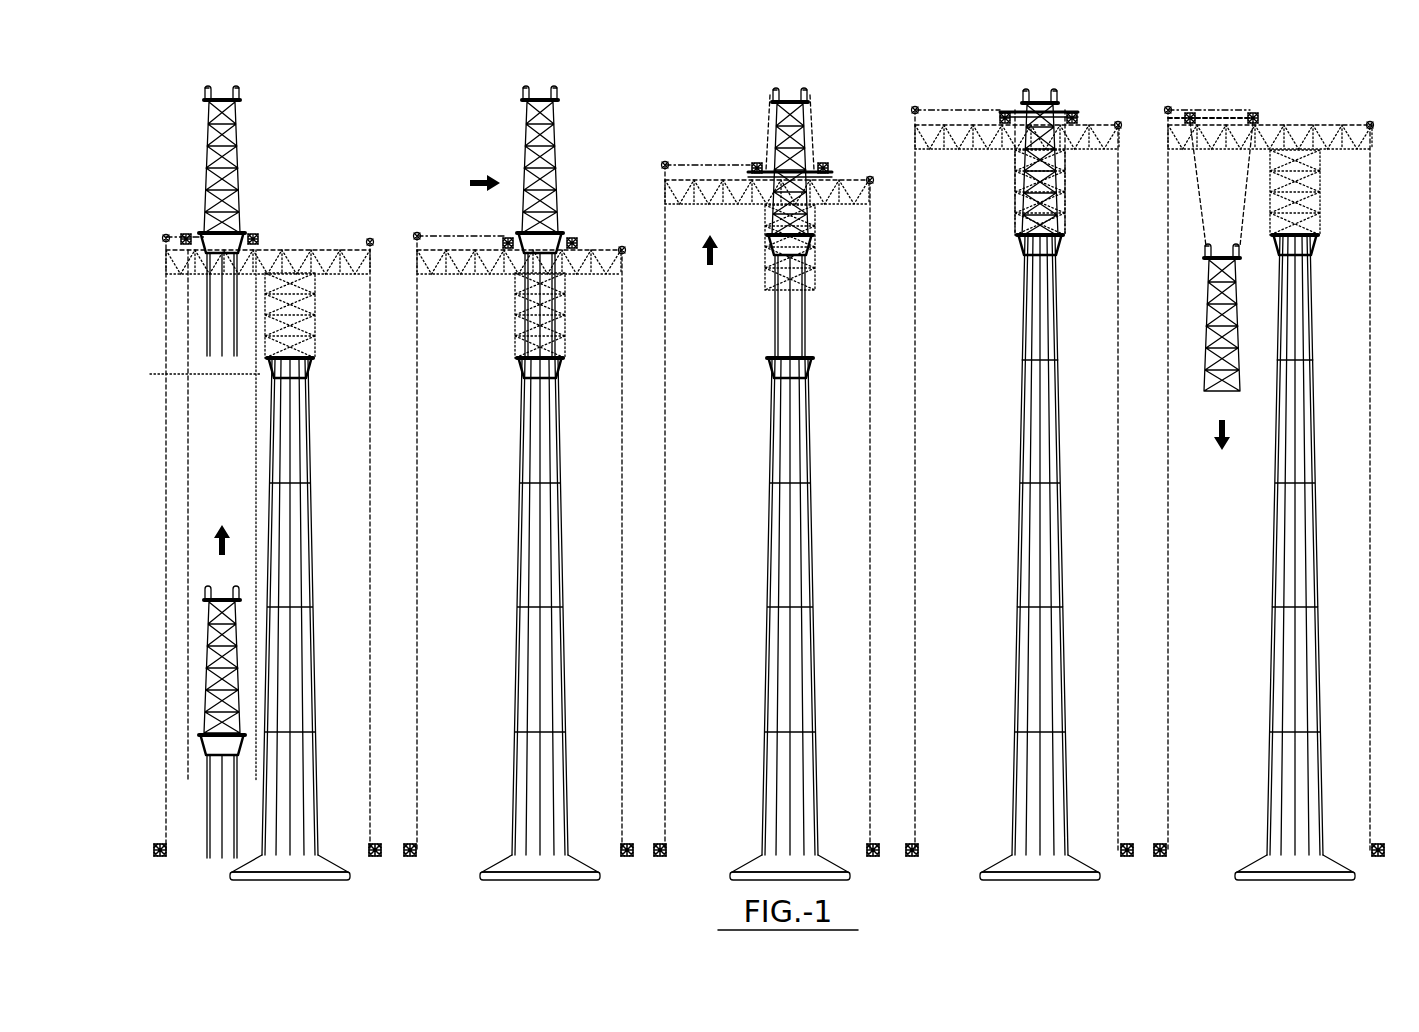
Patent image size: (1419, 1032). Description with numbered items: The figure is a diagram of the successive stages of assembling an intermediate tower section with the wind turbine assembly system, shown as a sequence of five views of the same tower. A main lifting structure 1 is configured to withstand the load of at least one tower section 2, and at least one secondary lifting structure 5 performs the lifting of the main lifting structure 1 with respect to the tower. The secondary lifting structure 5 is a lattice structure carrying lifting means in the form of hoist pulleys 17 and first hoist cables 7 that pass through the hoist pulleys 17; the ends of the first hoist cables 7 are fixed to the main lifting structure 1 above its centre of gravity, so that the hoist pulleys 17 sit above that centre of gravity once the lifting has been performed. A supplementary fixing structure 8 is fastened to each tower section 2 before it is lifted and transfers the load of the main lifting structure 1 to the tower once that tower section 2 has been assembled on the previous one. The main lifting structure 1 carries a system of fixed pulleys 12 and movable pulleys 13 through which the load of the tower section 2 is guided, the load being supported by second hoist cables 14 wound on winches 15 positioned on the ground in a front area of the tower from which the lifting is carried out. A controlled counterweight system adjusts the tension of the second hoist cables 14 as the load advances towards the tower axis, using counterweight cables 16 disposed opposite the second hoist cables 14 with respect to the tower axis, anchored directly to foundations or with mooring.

The main lifting structure 1 is at (325, 250).
The tower section 2 is at (215, 310).
The secondary lifting structure 5 is at (245, 155).
The first hoist cables 7 is at (771, 125).
The supplementary fixing structure 8 is at (243, 232).
The fixed pulleys 12 is at (166, 236).
The movable pulleys 13 is at (185, 236).
The second hoist cables 14 is at (188, 479).
The winches 15 is at (152, 849).
The counterweight cables 16 is at (165, 437).
The hoist pulleys 17 is at (233, 92).